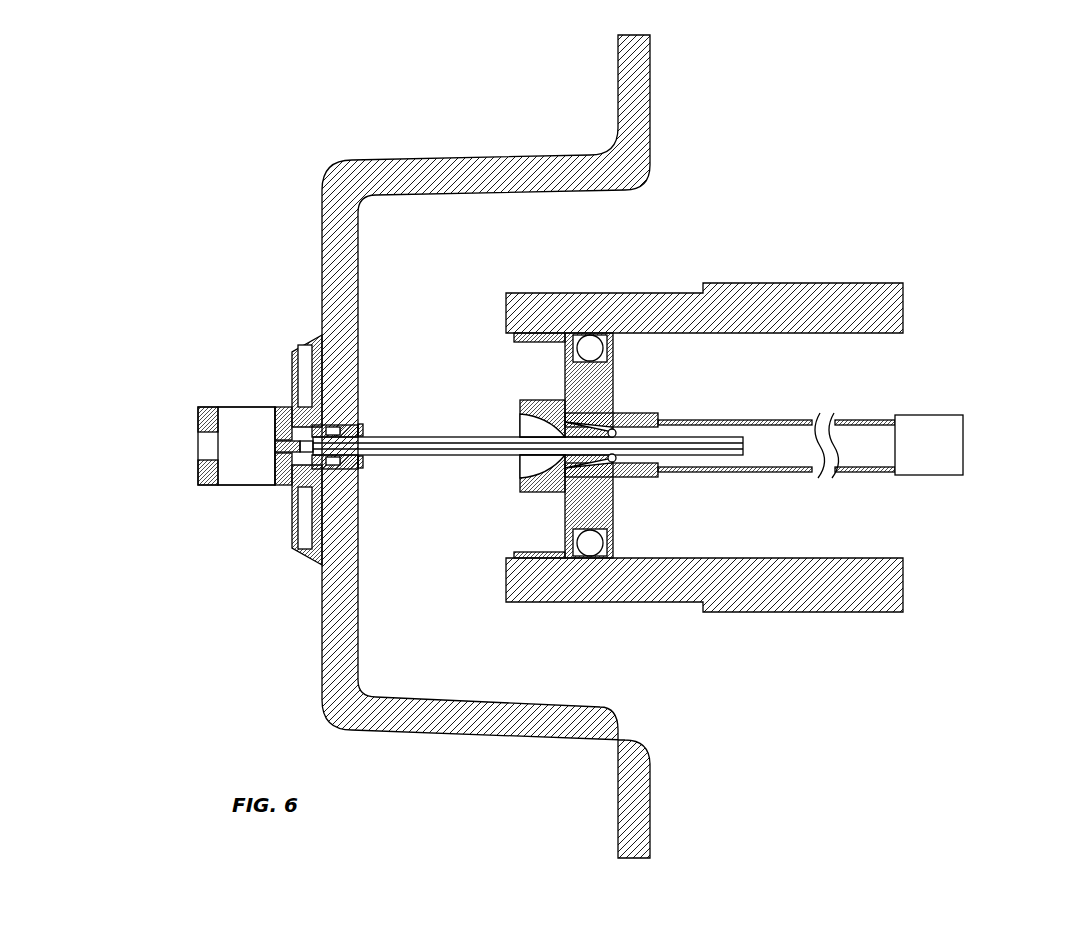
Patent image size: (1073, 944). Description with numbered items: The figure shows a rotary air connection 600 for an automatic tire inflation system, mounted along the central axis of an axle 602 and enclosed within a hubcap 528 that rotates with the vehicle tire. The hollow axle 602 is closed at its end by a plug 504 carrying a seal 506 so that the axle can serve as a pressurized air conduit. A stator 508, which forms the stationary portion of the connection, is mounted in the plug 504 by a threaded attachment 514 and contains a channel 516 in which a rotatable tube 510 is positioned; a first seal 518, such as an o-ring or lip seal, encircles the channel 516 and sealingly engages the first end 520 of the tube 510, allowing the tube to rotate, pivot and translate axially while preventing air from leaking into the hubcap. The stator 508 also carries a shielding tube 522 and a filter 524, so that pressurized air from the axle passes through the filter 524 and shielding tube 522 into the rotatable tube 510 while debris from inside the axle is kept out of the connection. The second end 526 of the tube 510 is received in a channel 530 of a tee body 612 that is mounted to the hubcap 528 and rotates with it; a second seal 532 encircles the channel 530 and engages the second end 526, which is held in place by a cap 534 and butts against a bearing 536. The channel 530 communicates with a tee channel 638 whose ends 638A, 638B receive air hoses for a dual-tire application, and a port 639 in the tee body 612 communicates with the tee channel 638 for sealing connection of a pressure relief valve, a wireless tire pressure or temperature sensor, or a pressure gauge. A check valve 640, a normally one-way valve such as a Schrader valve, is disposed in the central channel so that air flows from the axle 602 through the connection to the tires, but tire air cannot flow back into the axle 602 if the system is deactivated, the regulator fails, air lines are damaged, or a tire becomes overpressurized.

The hubcap 528 is at (548, 155).
The rotary air connection 600 is at (472, 272).
The axle 602 is at (758, 283).
The plug 504 is at (565, 508).
The seal 506 is at (592, 550).
The stator 508 is at (522, 404).
The channel 516 is at (522, 466).
The rotatable tube 510 is at (500, 437).
The threaded attachment 514 is at (612, 425).
The first seal 518 is at (613, 462).
The first end 520 is at (716, 455).
The shielding tube 522 is at (787, 473).
The filter 524 is at (966, 428).
The second end 526 is at (364, 463).
The second seal 532 is at (340, 428).
The cap 534 is at (363, 428).
The bearing 536 is at (312, 430).
The channel 530 is at (303, 458).
The tee body 612 is at (197, 423).
The check valve 640 is at (275, 447).
The tee channel 638 is at (225, 405).
The tee channel end 638A is at (225, 412).
The tee channel end 638B is at (228, 486).
The port 639 is at (197, 445).